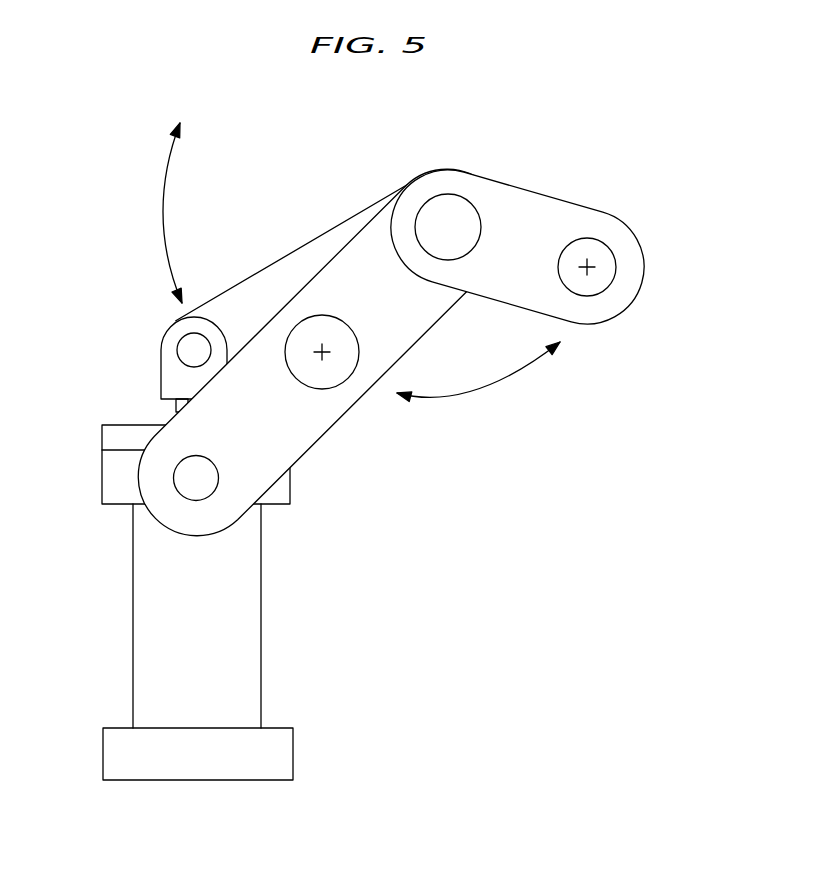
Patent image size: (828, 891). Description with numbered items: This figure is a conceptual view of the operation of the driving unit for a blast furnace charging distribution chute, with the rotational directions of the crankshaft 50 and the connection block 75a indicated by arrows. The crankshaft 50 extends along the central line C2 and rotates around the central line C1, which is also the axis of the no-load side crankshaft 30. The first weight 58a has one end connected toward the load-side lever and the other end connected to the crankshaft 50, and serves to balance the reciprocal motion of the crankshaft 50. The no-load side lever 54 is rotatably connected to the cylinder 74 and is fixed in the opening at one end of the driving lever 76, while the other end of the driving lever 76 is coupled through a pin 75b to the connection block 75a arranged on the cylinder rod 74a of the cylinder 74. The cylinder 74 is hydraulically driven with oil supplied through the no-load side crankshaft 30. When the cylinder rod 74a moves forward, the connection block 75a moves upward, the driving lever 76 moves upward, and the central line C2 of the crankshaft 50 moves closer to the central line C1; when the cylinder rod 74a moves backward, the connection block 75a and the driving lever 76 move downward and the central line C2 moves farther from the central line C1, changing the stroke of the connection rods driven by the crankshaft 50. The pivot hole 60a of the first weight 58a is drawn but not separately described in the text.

The no-load side crankshaft 30 is at (317, 370).
The crankshaft 50 is at (592, 250).
The no-load side lever 54 is at (427, 333).
The first weight 58a is at (528, 210).
The pivot hole 60a is at (447, 210).
The cylinder 74 is at (267, 621).
The cylinder rod 74a is at (175, 402).
The connection block 75a is at (177, 333).
The pin 75b is at (192, 354).
The driving lever 76 is at (290, 272).
The central line C1 is at (323, 356).
The central line C2 is at (590, 270).